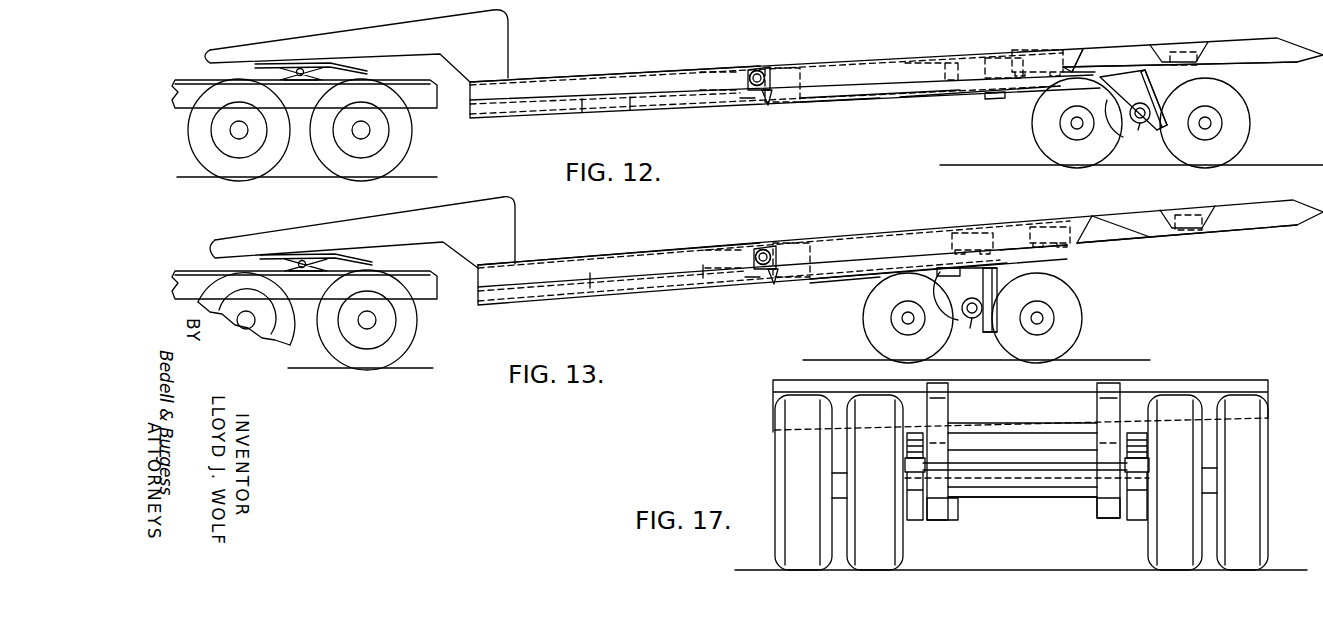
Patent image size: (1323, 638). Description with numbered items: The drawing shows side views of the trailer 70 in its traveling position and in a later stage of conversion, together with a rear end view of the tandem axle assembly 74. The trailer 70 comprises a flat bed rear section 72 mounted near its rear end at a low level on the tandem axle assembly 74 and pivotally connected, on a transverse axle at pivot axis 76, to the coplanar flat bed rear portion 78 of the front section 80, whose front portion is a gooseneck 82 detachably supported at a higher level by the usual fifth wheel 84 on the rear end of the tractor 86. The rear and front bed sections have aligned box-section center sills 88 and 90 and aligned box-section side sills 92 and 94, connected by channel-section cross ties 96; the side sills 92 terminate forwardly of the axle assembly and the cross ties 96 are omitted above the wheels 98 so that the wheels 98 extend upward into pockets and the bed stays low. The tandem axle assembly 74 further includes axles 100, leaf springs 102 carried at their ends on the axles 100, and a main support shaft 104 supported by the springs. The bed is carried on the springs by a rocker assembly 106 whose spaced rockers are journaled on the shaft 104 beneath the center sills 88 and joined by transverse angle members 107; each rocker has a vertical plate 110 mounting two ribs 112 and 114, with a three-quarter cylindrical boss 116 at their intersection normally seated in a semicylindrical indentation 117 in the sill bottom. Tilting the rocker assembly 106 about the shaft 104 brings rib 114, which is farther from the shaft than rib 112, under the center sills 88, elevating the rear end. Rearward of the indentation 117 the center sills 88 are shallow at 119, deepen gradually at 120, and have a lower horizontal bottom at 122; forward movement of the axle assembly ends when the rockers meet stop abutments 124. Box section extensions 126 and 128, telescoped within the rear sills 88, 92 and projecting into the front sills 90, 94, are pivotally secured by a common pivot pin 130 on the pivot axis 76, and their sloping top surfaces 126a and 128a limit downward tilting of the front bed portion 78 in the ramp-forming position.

In FIG. 12, the trailer 70 is at (858, 58).
In FIG. 13, the trailer 70 is at (847, 235).
In FIG. 12, the flat bed rear section 72 is at (1030, 50).
In FIG. 13, the flat bed rear section 72 is at (1015, 225).
In FIG. 12, the tandem axle assembly 74 is at (1150, 133).
In FIG. 13, the tandem axle assembly 74 is at (985, 330).
In FIG. 12, the pivot axis 76 is at (752, 72).
In FIG. 13, the pivot axis 76 is at (758, 250).
In FIG. 12, the flat bed rear portion of front section 78 is at (585, 77).
In FIG. 13, the flat bed rear portion of front section 78 is at (630, 257).
In FIG. 12, the front section 80 is at (550, 73).
In FIG. 13, the front section 80 is at (555, 257).
In FIG. 12, the gooseneck 82 is at (407, 30).
In FIG. 13, the gooseneck 82 is at (432, 214).
In FIG. 12, the fifth wheel 84 is at (346, 61).
In FIG. 13, the fifth wheel 84 is at (350, 252).
In FIG. 12, the tractor 86 is at (417, 98).
In FIG. 13, the tractor 86 is at (422, 288).
In FIG. 12, the center sills 88 is at (962, 97).
In FIG. 13, the center sills 88 is at (820, 283).
In FIG. 17, the center sills 88 is at (930, 400).
In FIG. 12, the center sills 90 is at (637, 117).
In FIG. 13, the center sills 90 is at (683, 293).
In FIG. 12, the side sills 92 is at (877, 83).
In FIG. 13, the side sills 92 is at (1060, 247).
In FIG. 12, the side sills 94 is at (569, 118).
In FIG. 13, the side sills 94 is at (594, 297).
In FIG. 12, the cross ties 96 is at (1007, 60).
In FIG. 13, the cross ties 96 is at (1055, 225).
In FIG. 12, the wheels 98 is at (1040, 137).
In FIG. 13, the wheels 98 is at (872, 327).
In FIG. 17, the wheels 98 is at (810, 540).
In FIG. 12, the axles 100 is at (1077, 123).
In FIG. 13, the axles 100 is at (908, 318).
In FIG. 17, the axles 100 is at (1053, 497).
In FIG. 17, the leaf springs 102 is at (912, 443).
In FIG. 12, the main support shaft 104 is at (1138, 130).
In FIG. 13, the main support shaft 104 is at (970, 328).
In FIG. 17, the main support shaft 104 is at (1015, 463).
In FIG. 12, the rocker assembly 106 is at (1120, 128).
In FIG. 13, the rocker assembly 106 is at (947, 296).
In FIG. 17, the transverse angle members 107 is at (1023, 425).
In FIG. 17, the vertical plate 110 is at (957, 443).
In FIG. 12, the rib 112 is at (1163, 95).
In FIG. 13, the rib 112 is at (997, 298).
In FIG. 17, the rib 112 is at (940, 433).
In FIG. 12, the rib 114 is at (1077, 73).
In FIG. 13, the rib 114 is at (953, 268).
In FIG. 17, the rib 114 is at (940, 515).
In FIG. 12, the boss 116 is at (1148, 67).
In FIG. 13, the boss 116 is at (1030, 255).
In FIG. 12, the indentation 117 is at (1153, 72).
In FIG. 13, the indentation 117 is at (1152, 240).
In FIG. 12, the shallow rear portion of center sills 119 is at (1243, 68).
In FIG. 13, the shallow rear portion of center sills 119 is at (1240, 230).
In FIG. 12, the deepened portion of center sills 120 is at (1073, 85).
In FIG. 13, the deepened portion of center sills 120 is at (1107, 252).
In FIG. 12, the horizontal bottom wall portion 122 is at (994, 97).
In FIG. 13, the horizontal bottom wall portion 122 is at (927, 273).
In FIG. 12, the stop abutments 124 is at (852, 100).
In FIG. 13, the stop abutments 124 is at (862, 278).
In FIG. 12, the box section extension 126 is at (753, 100).
In FIG. 13, the box section extension 126 is at (760, 287).
In FIG. 12, the top surface of extension 126a is at (707, 88).
In FIG. 13, the top surface of extension 126a is at (715, 266).
In FIG. 12, the box section extension 128 is at (762, 97).
In FIG. 13, the box section extension 128 is at (765, 275).
In FIG. 12, the top surface of extension 128a is at (723, 82).
In FIG. 13, the top surface of extension 128a is at (735, 255).
In FIG. 12, the pivot pin 130 is at (760, 72).
In FIG. 13, the pivot pin 130 is at (766, 250).